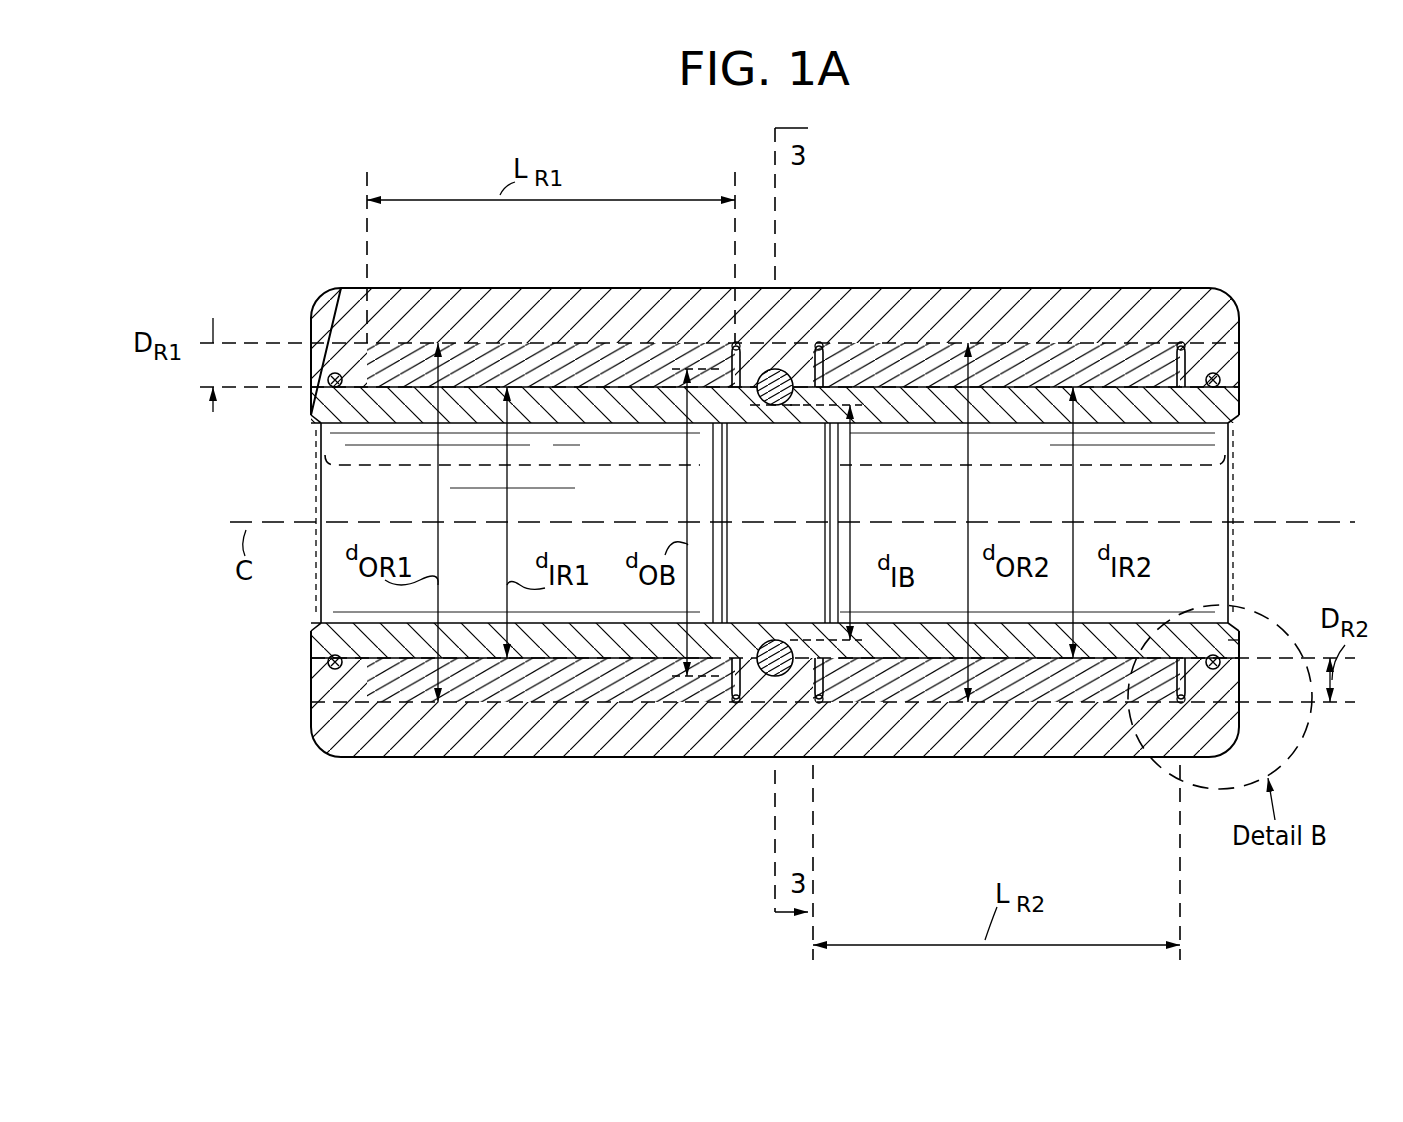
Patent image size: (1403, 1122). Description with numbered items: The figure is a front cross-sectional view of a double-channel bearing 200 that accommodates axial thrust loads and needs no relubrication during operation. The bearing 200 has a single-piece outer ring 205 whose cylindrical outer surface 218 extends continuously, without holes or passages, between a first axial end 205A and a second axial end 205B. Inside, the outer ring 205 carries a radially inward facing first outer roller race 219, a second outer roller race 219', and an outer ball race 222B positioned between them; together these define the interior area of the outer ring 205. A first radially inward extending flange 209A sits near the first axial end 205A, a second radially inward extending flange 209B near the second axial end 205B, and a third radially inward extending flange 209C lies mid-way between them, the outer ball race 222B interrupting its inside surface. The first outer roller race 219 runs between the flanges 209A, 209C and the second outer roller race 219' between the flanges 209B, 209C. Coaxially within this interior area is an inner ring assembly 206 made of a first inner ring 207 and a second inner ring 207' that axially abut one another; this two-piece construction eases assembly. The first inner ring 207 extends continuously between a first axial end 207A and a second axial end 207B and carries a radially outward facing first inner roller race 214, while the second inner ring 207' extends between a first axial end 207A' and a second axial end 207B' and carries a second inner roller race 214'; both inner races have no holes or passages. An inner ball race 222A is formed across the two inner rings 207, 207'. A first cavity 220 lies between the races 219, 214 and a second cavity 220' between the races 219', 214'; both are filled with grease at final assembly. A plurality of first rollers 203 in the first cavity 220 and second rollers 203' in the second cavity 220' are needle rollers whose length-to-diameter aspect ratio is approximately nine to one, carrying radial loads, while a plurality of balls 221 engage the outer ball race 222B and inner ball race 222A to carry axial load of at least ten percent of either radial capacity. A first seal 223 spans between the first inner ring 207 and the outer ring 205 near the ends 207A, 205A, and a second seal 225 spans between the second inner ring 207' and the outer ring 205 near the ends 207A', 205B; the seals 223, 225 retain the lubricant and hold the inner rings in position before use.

The bearing 200 is at (1080, 192).
The first rollers 203 is at (478, 515).
The second rollers 203' is at (1077, 519).
The outer ring 205 is at (968, 300).
The first axial end of outer ring 205A is at (311, 355).
The second axial end of outer ring 205B is at (1240, 342).
The inner ring assembly 206 is at (745, 465).
The first inner ring 207 is at (551, 732).
The second inner ring 207' is at (996, 734).
The first axial end of first inner ring 207A is at (278, 660).
The first axial end of second inner ring 207A' is at (1268, 593).
The second axial end of first inner ring 207B is at (874, 729).
The second axial end of second inner ring 207B' is at (783, 434).
The first radially inward extending flange 209A is at (316, 360).
The second radially inward extending flange 209B is at (1230, 360).
The third radially inward extending flange 209C is at (778, 372).
The first inner roller race 214 is at (610, 738).
The second inner roller race 214' is at (957, 762).
The outer surface 218 is at (922, 290).
The first outer roller race 219 is at (551, 314).
The second outer roller race 219' is at (996, 314).
The first cavity 220 is at (732, 252).
The second cavity 220' is at (1230, 294).
The balls 221 is at (780, 676).
The inner ball race 222A is at (746, 655).
The outer ball race 222B is at (803, 338).
The first seal 223 is at (332, 705).
The second seal 225 is at (1222, 672).